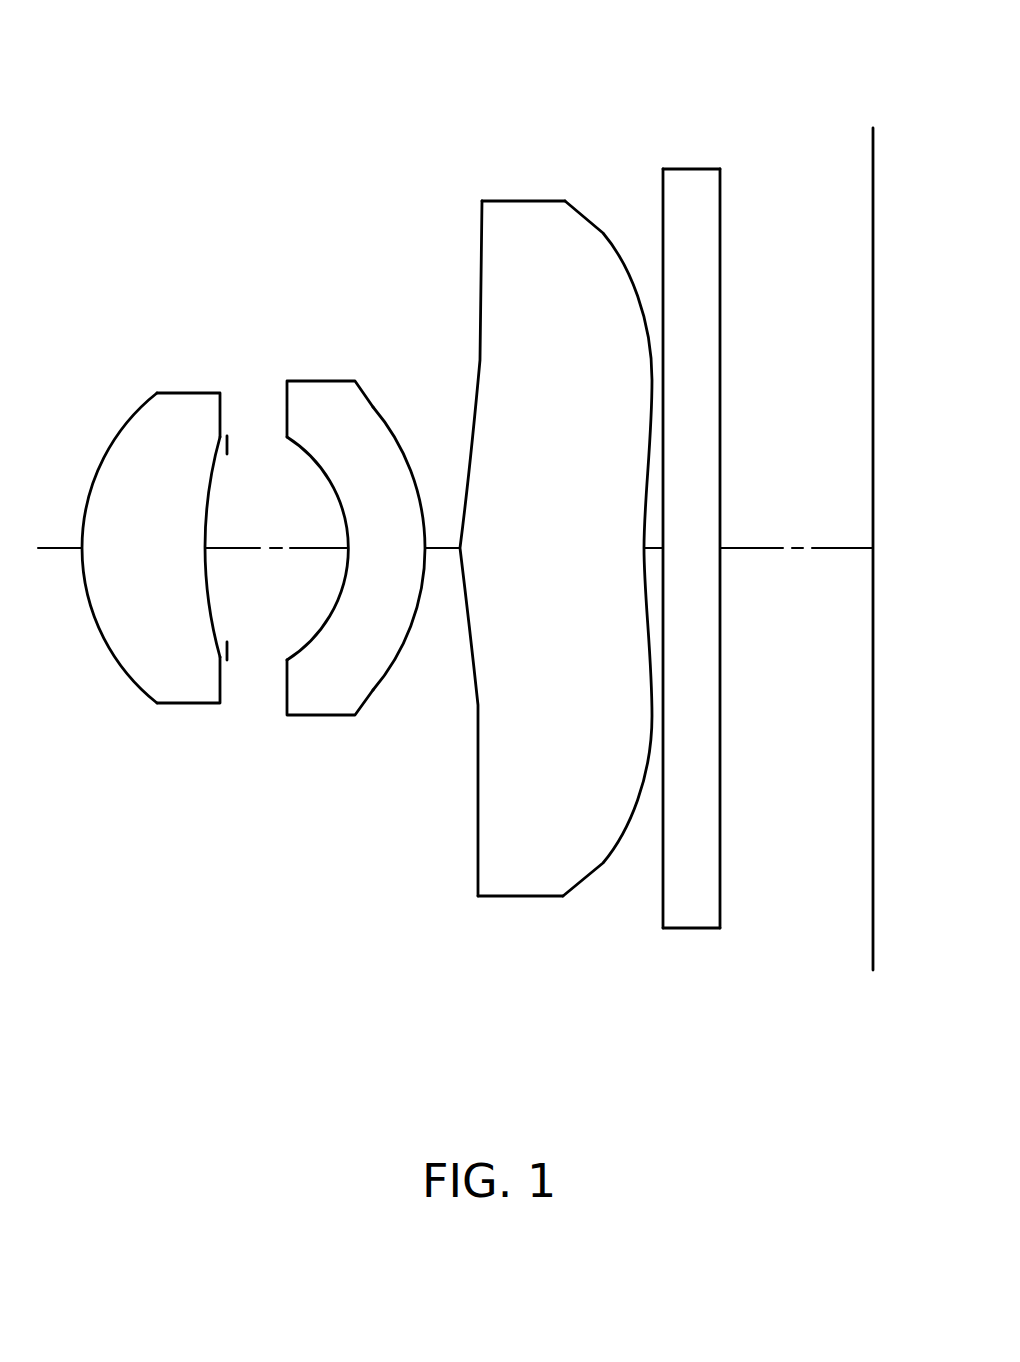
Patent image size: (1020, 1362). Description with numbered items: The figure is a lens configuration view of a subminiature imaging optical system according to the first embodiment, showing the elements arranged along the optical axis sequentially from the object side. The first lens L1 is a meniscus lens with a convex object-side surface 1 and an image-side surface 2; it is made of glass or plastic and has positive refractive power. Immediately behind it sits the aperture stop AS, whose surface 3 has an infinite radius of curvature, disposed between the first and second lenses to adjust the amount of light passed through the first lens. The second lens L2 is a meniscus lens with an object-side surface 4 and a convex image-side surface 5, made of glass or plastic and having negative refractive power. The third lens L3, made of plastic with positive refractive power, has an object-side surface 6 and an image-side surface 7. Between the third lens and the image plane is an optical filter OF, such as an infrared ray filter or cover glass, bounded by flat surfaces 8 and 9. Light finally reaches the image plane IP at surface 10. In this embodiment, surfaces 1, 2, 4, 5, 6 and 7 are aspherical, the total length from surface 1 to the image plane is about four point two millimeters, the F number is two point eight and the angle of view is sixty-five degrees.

The object-side surface of first lens 1 is at (127, 423).
The image-side surface of first lens 2 is at (222, 395).
The aperture stop surface 3 is at (228, 440).
The object-side surface of second lens 4 is at (285, 392).
The image-side surface of second lens 5 is at (371, 400).
The object-side surface of third lens 6 is at (480, 237).
The image-side surface of third lens 7 is at (603, 236).
The object-side surface of optical filter 8 is at (665, 188).
The image-side surface of optical filter 9 is at (725, 198).
The image plane surface 10 is at (866, 143).
The first lens L1 is at (156, 558).
The aperture stop AS is at (239, 570).
The second lens L2 is at (353, 565).
The third lens L3 is at (551, 571).
The optical filter OF is at (699, 574).
The image plane IP is at (866, 578).